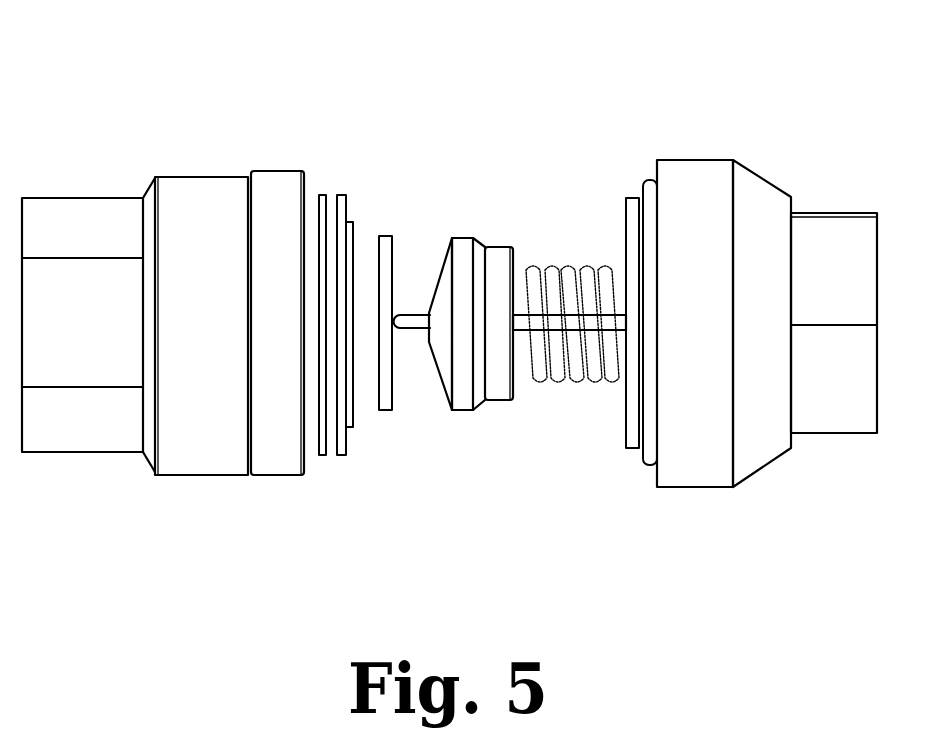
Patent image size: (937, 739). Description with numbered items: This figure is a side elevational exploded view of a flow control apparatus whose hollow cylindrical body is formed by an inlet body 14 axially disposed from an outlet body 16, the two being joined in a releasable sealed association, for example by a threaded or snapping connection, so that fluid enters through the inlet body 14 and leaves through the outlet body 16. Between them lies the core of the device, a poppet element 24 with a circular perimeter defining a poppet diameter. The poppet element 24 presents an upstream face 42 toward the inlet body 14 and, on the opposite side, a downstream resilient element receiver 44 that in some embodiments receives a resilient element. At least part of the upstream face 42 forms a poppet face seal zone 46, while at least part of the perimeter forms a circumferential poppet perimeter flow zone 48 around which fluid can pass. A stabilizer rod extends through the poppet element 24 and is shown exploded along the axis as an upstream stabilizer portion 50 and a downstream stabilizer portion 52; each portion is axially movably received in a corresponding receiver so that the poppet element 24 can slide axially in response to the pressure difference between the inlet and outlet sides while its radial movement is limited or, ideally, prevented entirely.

The inlet body 14 is at (208, 187).
The outlet body 16 is at (715, 178).
The poppet element 24 is at (437, 299).
The upstream face 42 is at (447, 302).
The downstream resilient element receiver 44 is at (540, 398).
The poppet face seal zone 46 is at (436, 394).
The circumferential poppet perimeter flow zone 48 is at (460, 408).
The upstream stabilizer portion 50 is at (413, 325).
The downstream stabilizer portion 52 is at (547, 313).